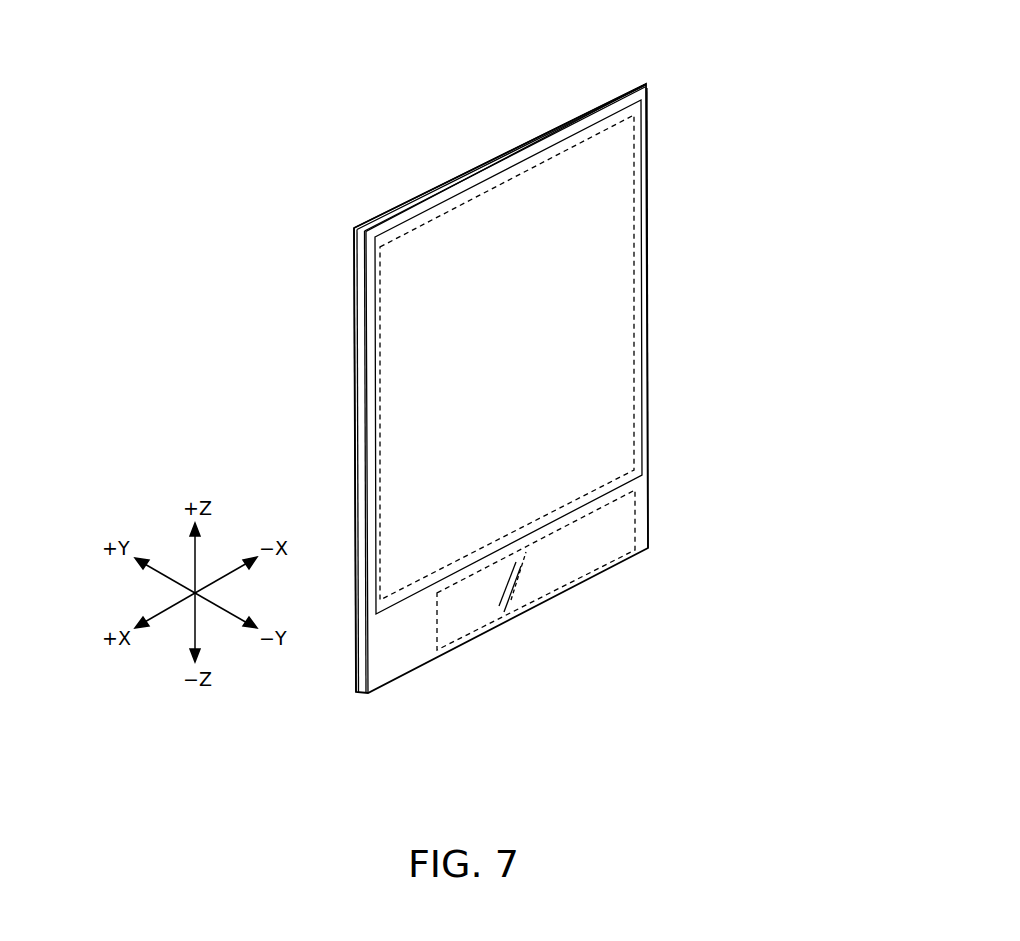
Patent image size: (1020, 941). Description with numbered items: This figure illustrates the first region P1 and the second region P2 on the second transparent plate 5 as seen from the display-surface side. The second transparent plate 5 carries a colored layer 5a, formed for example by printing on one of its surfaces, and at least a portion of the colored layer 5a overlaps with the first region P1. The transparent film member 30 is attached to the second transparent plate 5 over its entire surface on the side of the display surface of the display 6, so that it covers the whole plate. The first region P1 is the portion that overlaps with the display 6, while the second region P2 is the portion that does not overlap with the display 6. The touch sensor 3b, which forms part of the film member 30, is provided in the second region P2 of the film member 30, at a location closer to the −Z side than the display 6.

The second transparent plate 5 is at (354, 236).
The colored layer 5a is at (613, 128).
The display 6 is at (521, 170).
The film member 30 is at (441, 190).
The first region P1 is at (583, 236).
The second region P2 is at (657, 506).
The touch sensor 3b is at (443, 650).